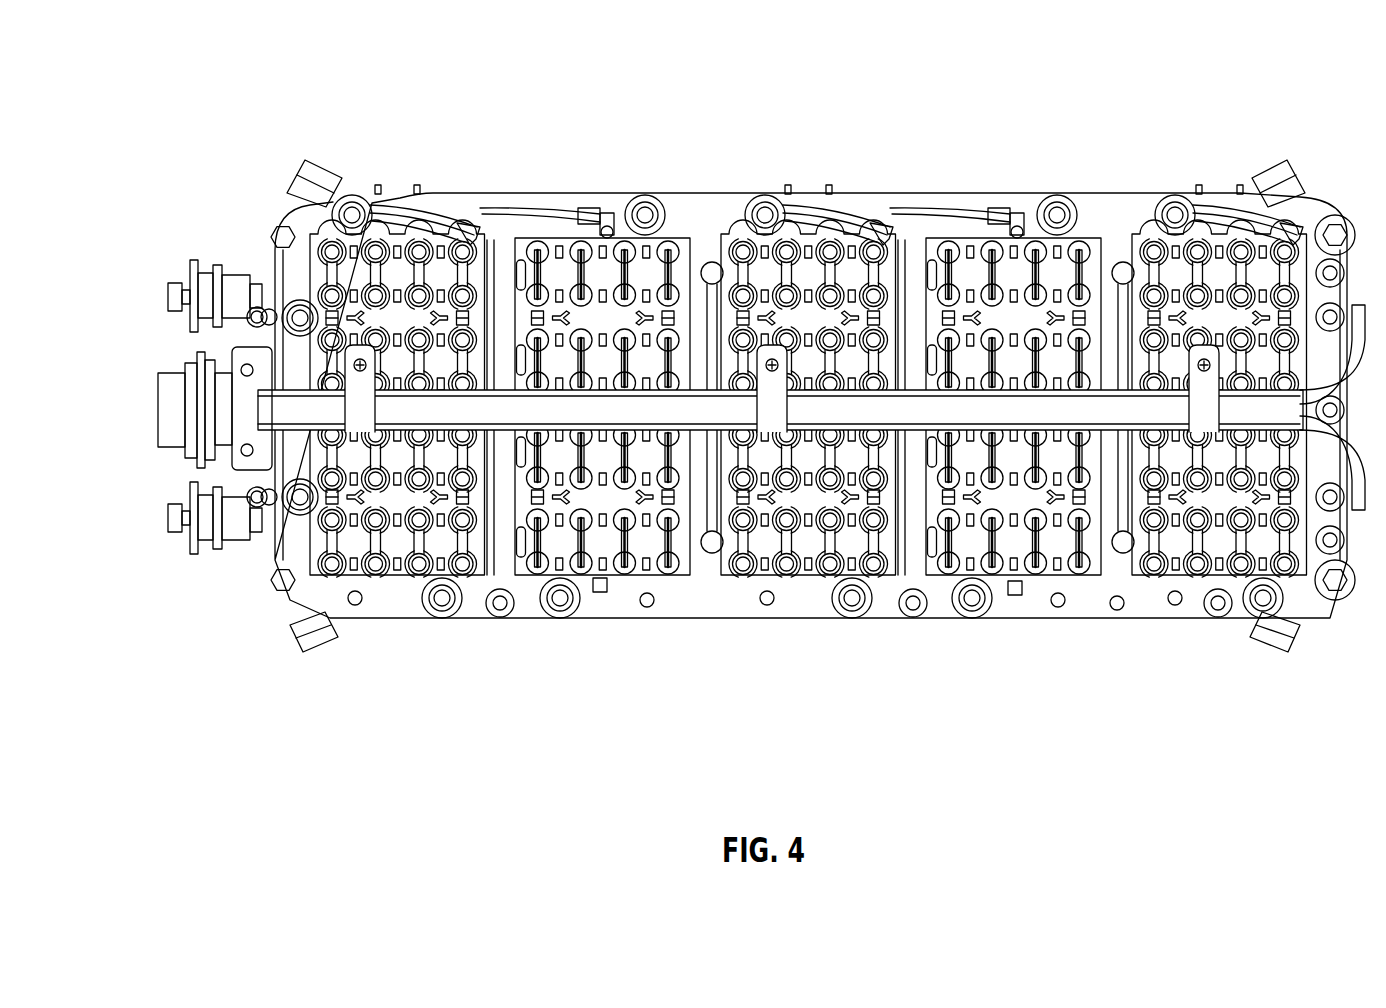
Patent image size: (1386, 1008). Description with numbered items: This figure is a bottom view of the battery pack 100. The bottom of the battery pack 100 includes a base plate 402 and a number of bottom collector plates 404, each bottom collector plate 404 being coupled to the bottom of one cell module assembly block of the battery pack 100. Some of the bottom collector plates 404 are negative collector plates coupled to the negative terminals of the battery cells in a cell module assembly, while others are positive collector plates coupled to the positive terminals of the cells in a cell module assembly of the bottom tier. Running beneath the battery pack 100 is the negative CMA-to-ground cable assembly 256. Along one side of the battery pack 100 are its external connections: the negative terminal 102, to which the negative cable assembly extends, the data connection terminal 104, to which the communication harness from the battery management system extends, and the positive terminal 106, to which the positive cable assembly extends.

The battery pack 100 is at (306, 96).
The negative terminal 102 is at (160, 297).
The data connection terminal 104 is at (148, 408).
The positive terminal 106 is at (158, 519).
The negative CMA-to-ground cable assembly 256 is at (927, 420).
The base plate 402 is at (705, 212).
The bottom collector plates 404 is at (860, 222).